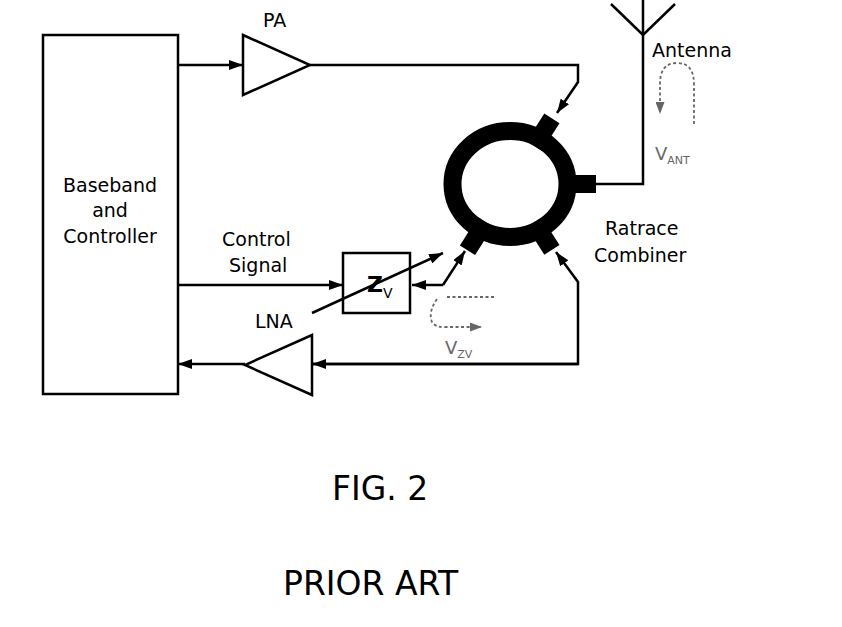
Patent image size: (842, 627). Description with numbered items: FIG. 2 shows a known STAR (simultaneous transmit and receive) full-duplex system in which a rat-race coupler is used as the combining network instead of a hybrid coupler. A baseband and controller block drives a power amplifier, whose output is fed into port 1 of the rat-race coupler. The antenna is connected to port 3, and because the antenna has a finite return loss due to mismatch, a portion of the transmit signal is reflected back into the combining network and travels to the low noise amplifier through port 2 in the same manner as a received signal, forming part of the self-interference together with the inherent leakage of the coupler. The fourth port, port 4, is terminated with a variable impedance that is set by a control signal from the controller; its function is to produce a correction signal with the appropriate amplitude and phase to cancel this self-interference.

The port 1 is at (517, 123).
The port 2 is at (590, 262).
The port 3 is at (601, 164).
The port 4 is at (437, 235).